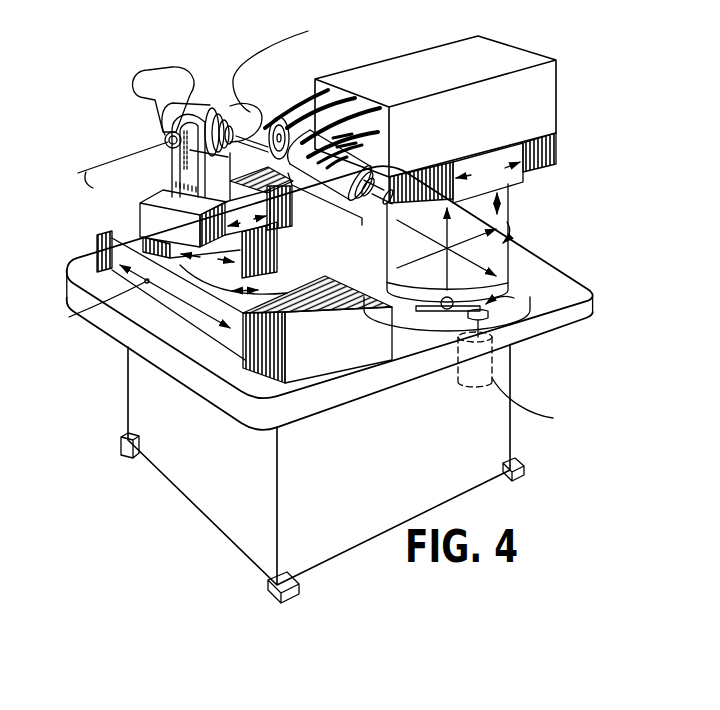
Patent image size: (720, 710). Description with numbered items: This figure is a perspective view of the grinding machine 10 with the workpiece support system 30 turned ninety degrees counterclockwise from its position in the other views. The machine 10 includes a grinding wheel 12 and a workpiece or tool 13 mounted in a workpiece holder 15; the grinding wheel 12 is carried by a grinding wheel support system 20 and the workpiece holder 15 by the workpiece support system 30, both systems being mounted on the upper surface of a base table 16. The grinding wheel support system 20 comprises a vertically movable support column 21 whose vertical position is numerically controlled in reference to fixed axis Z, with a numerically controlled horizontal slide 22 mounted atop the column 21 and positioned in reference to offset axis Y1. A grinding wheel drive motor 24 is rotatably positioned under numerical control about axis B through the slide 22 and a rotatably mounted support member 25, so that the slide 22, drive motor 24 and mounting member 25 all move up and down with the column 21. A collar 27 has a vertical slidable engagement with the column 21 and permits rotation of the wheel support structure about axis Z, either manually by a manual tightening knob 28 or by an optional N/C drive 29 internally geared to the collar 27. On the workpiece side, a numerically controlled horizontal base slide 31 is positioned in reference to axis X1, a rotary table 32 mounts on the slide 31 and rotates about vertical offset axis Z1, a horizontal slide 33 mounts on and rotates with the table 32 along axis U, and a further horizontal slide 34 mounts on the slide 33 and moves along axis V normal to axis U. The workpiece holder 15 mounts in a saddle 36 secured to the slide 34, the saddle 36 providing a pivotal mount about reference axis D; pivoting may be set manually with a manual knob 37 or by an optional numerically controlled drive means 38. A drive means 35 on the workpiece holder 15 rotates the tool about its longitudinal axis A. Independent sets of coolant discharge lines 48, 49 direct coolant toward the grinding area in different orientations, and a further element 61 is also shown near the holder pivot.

The machine 10 is at (128, 196).
The grinding wheel 12 is at (278, 118).
The workpiece or tool 13 is at (250, 143).
The workpiece holder 15 is at (200, 113).
The base table 16 is at (601, 300).
The grinding wheel support system 20 is at (520, 192).
The vertically movable support column 21 is at (509, 218).
The horizontal slide 22 is at (560, 147).
The grinding wheel drive motor 24 is at (363, 206).
The rotatably mounted support member 25 is at (375, 128).
The collar 27 is at (528, 300).
The manual tightening knob 28 is at (446, 297).
The N/C drive 29 is at (494, 363).
The workpiece support system 30 is at (115, 134).
The N/C horizontal base slide 31 is at (228, 335).
The N/C rotary table 32 is at (182, 268).
The N/C horizontal slide 33 is at (186, 259).
The N/C horizontal slide 34 is at (290, 218).
The N/C drive means 35 is at (147, 78).
The saddle 36 is at (173, 183).
The manual knob 37 is at (165, 141).
The numerically controlled drive means 38 is at (262, 101).
The coolant discharge lines 48 is at (333, 93).
The coolant discharge lines 49 is at (366, 148).
The lock nut 61 is at (166, 134).